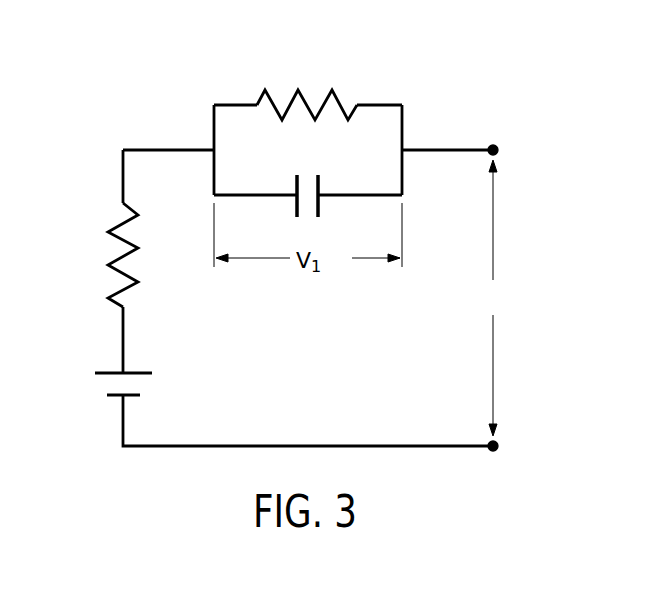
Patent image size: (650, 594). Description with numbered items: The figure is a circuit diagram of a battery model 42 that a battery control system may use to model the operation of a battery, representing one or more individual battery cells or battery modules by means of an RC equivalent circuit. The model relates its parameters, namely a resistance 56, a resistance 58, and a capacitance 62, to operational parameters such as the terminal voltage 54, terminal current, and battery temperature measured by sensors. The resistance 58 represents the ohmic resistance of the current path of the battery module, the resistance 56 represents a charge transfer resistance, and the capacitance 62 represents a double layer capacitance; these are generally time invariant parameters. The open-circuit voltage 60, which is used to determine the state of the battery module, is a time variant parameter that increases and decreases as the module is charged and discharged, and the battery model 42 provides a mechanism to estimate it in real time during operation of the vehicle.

The battery model 42 is at (147, 71).
The terminal voltage 54 is at (515, 297).
The resistance 56 is at (290, 108).
The resistance 58 is at (118, 246).
The open-circuit voltage 60 is at (108, 372).
The capacitance 62 is at (322, 184).